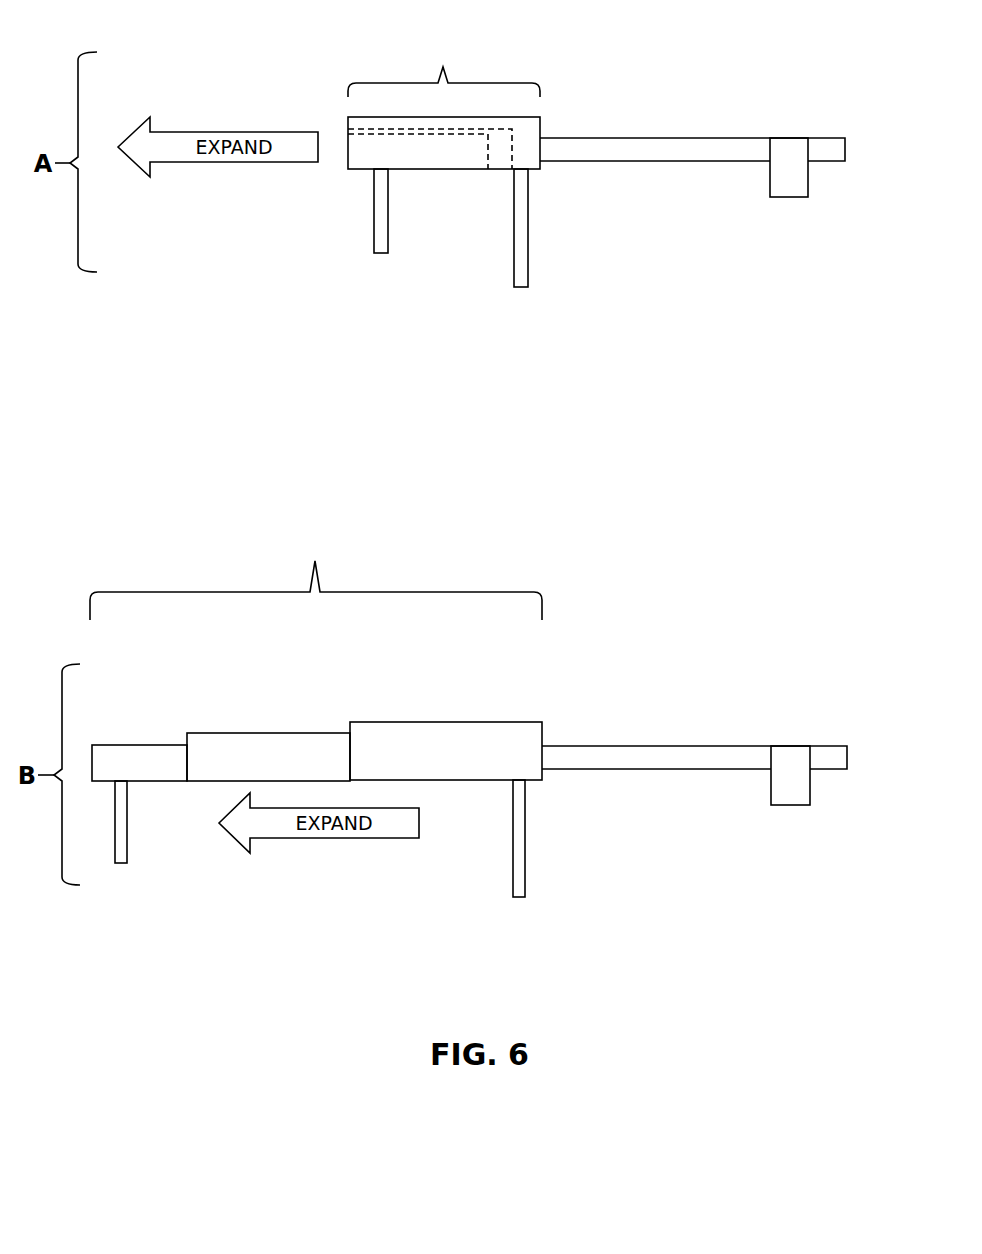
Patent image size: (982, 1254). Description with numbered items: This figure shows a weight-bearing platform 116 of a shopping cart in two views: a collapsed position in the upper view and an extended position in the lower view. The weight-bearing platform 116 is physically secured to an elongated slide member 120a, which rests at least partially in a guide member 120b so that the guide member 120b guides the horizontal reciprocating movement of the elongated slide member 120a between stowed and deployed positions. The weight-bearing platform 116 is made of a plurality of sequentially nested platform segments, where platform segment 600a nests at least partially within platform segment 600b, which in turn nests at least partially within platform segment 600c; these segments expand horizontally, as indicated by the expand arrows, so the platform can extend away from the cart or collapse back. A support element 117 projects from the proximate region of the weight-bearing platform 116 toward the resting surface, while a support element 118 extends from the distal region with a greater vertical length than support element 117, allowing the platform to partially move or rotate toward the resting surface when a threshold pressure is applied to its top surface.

The weight-bearing platform 116 is at (316, 330).
The support element 117 is at (286, 548).
The support element 118 is at (559, 564).
The elongated slide member 120a is at (693, 416).
The guide member 120b is at (770, 434).
The platform segment 600a is at (316, 449).
The platform segment 600b is at (402, 457).
The platform segment 600c is at (489, 454).